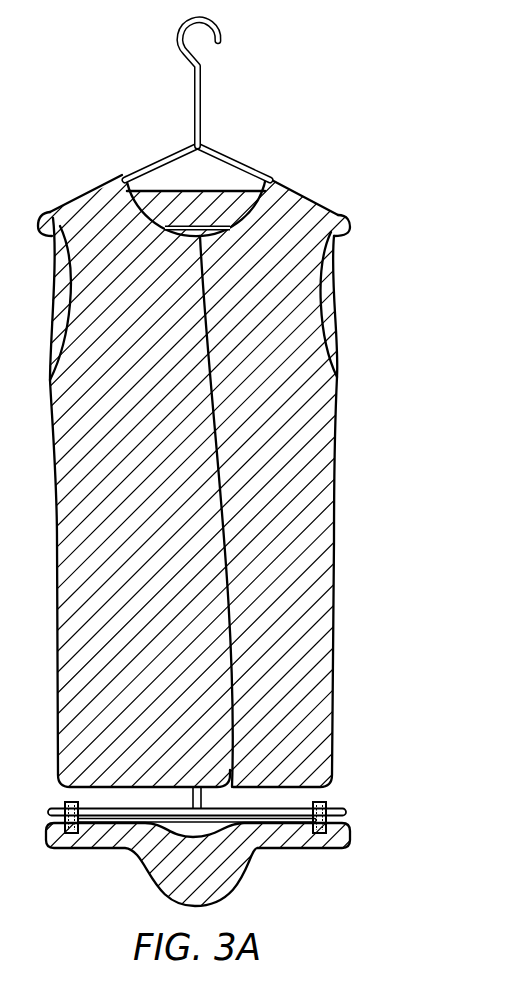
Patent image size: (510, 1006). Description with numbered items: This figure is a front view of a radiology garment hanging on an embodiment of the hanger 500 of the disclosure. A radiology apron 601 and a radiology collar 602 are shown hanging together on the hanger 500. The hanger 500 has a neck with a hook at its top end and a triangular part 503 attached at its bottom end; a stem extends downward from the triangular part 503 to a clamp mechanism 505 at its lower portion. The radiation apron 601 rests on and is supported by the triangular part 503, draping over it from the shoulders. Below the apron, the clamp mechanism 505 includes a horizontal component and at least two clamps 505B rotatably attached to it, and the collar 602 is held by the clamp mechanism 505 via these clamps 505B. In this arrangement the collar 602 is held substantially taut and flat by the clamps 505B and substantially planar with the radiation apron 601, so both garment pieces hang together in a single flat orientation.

The hanger 500 is at (201, 108).
The triangular part 503 is at (232, 166).
The radiology apron 601 is at (338, 425).
The clamp mechanism 505 is at (363, 809).
The clamps 505B is at (327, 802).
The radiology collar 602 is at (327, 850).